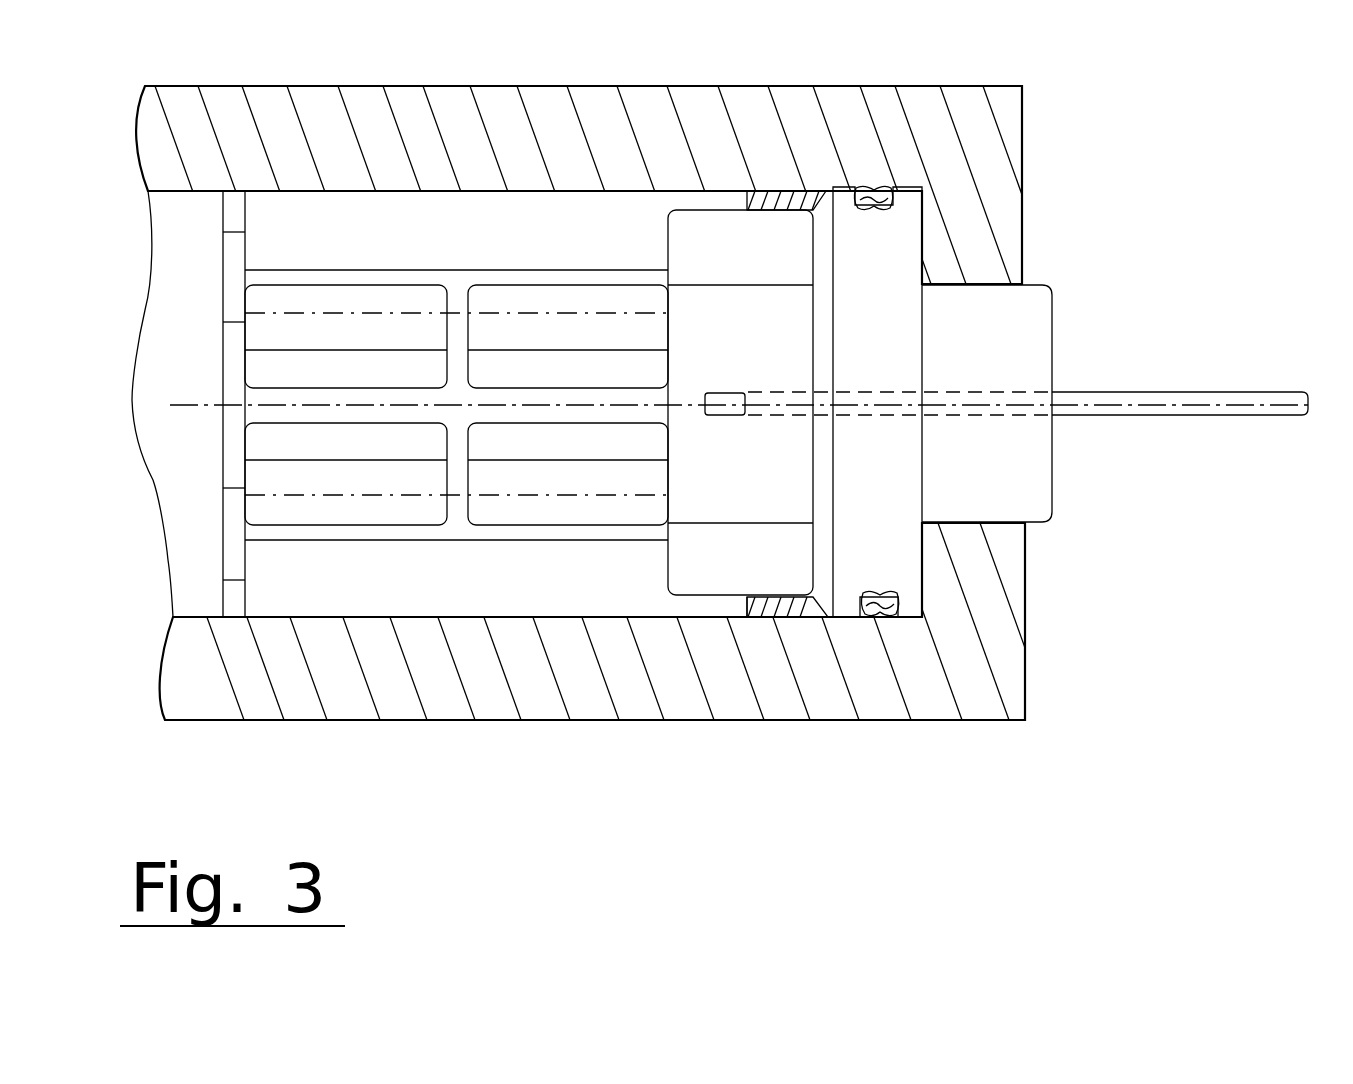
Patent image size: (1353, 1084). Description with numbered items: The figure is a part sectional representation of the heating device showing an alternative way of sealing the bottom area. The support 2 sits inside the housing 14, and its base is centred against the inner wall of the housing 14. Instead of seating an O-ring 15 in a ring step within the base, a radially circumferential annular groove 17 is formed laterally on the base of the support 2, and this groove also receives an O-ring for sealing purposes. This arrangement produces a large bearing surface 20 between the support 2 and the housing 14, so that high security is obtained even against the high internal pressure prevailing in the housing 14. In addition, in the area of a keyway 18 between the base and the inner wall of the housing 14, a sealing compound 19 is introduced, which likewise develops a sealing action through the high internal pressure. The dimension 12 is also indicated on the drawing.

The support 2 is at (704, 556).
The piston rod 12 is at (215, 191).
The housing 14 is at (970, 668).
The O-ring 15 is at (898, 596).
The annular groove 17 is at (873, 592).
The keyway 18 is at (802, 617).
The sealing compound 19 is at (767, 617).
The bearing surface 20 is at (928, 236).